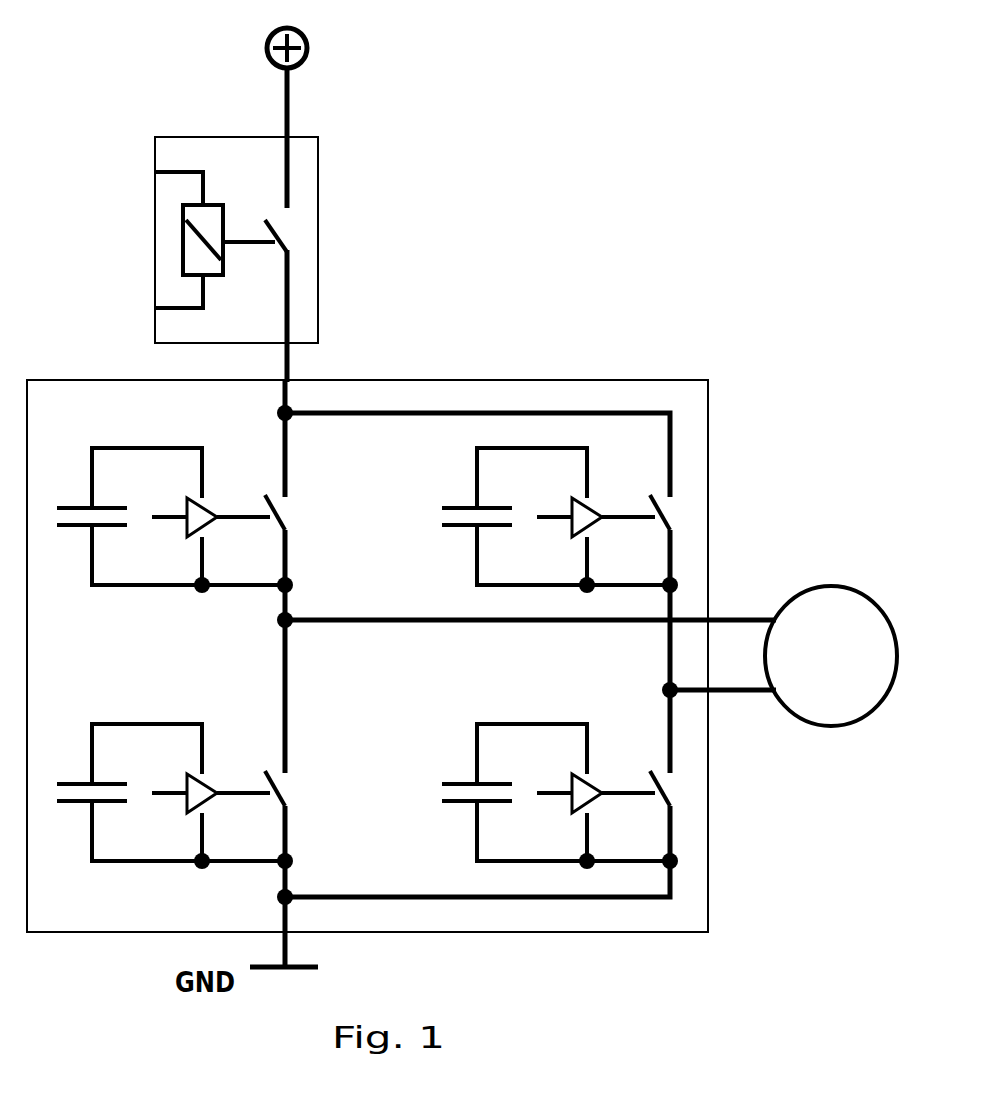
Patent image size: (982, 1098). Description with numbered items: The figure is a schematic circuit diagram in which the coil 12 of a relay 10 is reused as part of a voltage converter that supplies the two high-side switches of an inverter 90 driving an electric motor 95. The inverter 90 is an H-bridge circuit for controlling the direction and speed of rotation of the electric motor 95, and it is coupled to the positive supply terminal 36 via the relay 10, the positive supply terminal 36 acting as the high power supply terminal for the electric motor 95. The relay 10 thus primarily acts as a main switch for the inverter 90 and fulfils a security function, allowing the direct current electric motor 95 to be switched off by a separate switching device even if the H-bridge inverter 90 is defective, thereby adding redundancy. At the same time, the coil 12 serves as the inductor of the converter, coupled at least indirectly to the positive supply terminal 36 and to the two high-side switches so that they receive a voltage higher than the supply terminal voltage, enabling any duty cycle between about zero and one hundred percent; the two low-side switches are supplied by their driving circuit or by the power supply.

The relay 10 is at (193, 259).
The coil 12 is at (203, 245).
The positive supply terminal 36 is at (268, 37).
The inverter 90 is at (472, 402).
The electric motor 95 is at (865, 620).